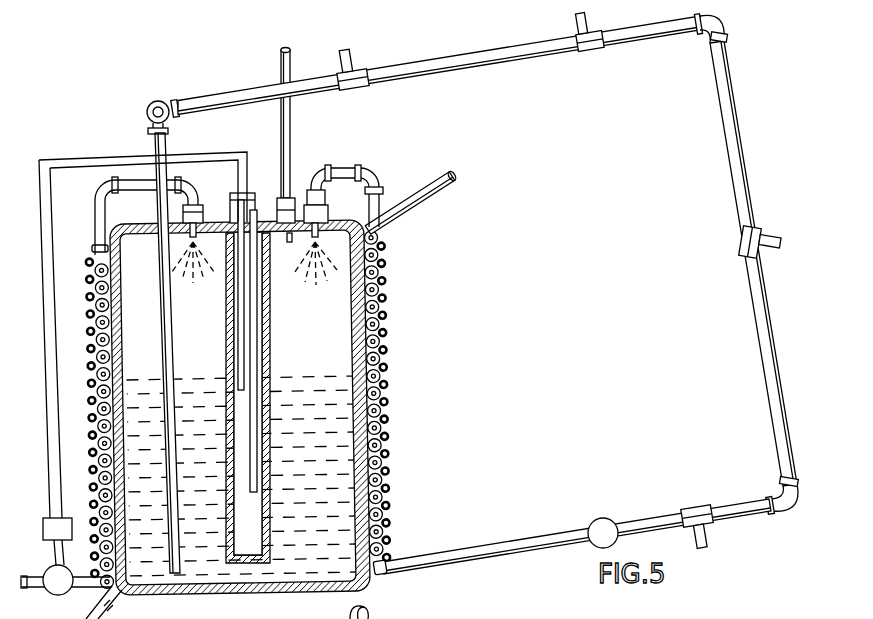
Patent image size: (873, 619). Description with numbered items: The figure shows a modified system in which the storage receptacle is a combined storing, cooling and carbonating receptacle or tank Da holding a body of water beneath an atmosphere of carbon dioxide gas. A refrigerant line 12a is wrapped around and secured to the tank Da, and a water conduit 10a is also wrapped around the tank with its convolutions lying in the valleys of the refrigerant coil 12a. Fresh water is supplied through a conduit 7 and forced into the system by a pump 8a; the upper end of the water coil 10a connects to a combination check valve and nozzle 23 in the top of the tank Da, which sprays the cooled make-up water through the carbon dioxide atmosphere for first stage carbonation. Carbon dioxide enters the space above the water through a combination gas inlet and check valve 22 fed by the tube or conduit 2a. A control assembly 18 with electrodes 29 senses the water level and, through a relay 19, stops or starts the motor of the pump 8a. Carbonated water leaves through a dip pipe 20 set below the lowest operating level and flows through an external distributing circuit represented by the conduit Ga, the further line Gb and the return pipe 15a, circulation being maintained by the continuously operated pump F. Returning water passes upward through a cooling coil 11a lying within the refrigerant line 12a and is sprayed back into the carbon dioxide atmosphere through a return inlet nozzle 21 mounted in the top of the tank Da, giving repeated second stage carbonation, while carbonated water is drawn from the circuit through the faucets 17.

The tube or conduit 2a is at (291, 140).
The conduit 7 is at (33, 590).
The pump 8a is at (66, 580).
The water conduit 10a is at (380, 240).
The cooling coil 11a is at (96, 212).
The refrigerant line 12a is at (434, 190).
The return pipe 15a is at (485, 558).
The faucets 17 is at (358, 88).
The control assembly 18 is at (256, 193).
The relay 19 is at (48, 518).
The dip pipe 20 is at (178, 552).
The return inlet nozzle 21 is at (200, 208).
The combination gas inlet and check valve 22 is at (289, 244).
The combination check valve and nozzle 23 is at (339, 225).
The electrodes 29 is at (253, 322).
The conduit Ga is at (553, 58).
The gas line Gb is at (546, 616).
The combined storing, cooling and carbonating receptacle or tank Da is at (240, 407).
The pump F is at (603, 533).